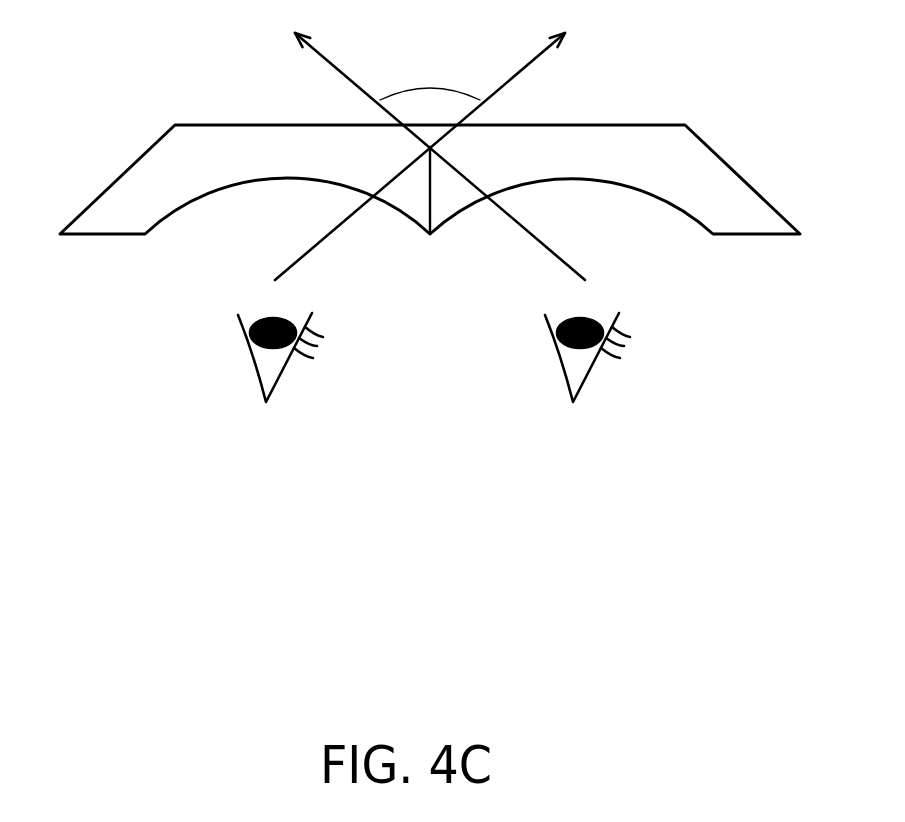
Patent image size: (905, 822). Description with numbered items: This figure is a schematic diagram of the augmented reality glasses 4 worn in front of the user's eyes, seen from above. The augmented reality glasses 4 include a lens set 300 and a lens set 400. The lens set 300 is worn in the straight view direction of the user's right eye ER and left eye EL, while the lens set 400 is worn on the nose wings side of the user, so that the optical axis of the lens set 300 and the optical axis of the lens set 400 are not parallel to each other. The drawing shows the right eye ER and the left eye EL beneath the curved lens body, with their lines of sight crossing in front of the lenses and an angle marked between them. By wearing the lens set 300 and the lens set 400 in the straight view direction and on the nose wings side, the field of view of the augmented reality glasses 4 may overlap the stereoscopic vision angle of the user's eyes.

The augmented reality glasses 4 is at (137, 75).
The lens set 300 is at (628, 123).
The lens set 400 is at (445, 138).
The left eye EL is at (260, 365).
The right eye ER is at (565, 365).